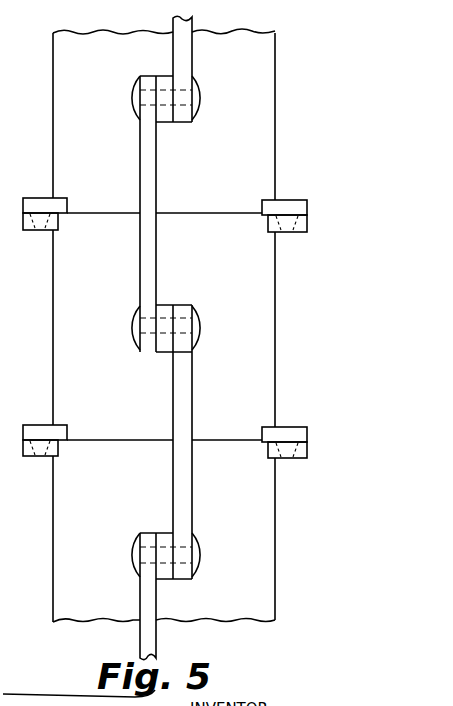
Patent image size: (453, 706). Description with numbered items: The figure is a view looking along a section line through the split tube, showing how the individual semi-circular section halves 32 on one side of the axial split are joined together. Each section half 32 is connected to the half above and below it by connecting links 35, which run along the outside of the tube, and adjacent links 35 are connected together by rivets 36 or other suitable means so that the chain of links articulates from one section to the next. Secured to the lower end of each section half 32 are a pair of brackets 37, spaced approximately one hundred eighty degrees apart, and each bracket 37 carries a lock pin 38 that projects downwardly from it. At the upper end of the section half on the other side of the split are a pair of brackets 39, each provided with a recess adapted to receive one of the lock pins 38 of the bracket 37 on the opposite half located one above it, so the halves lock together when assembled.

The semi-circular section half 32 is at (258, 340).
The connecting link 35 is at (145, 280).
The rivet 36 is at (133, 97).
The bracket 37 is at (33, 198).
The lock pin 38 is at (312, 223).
The bracket 39 is at (25, 226).